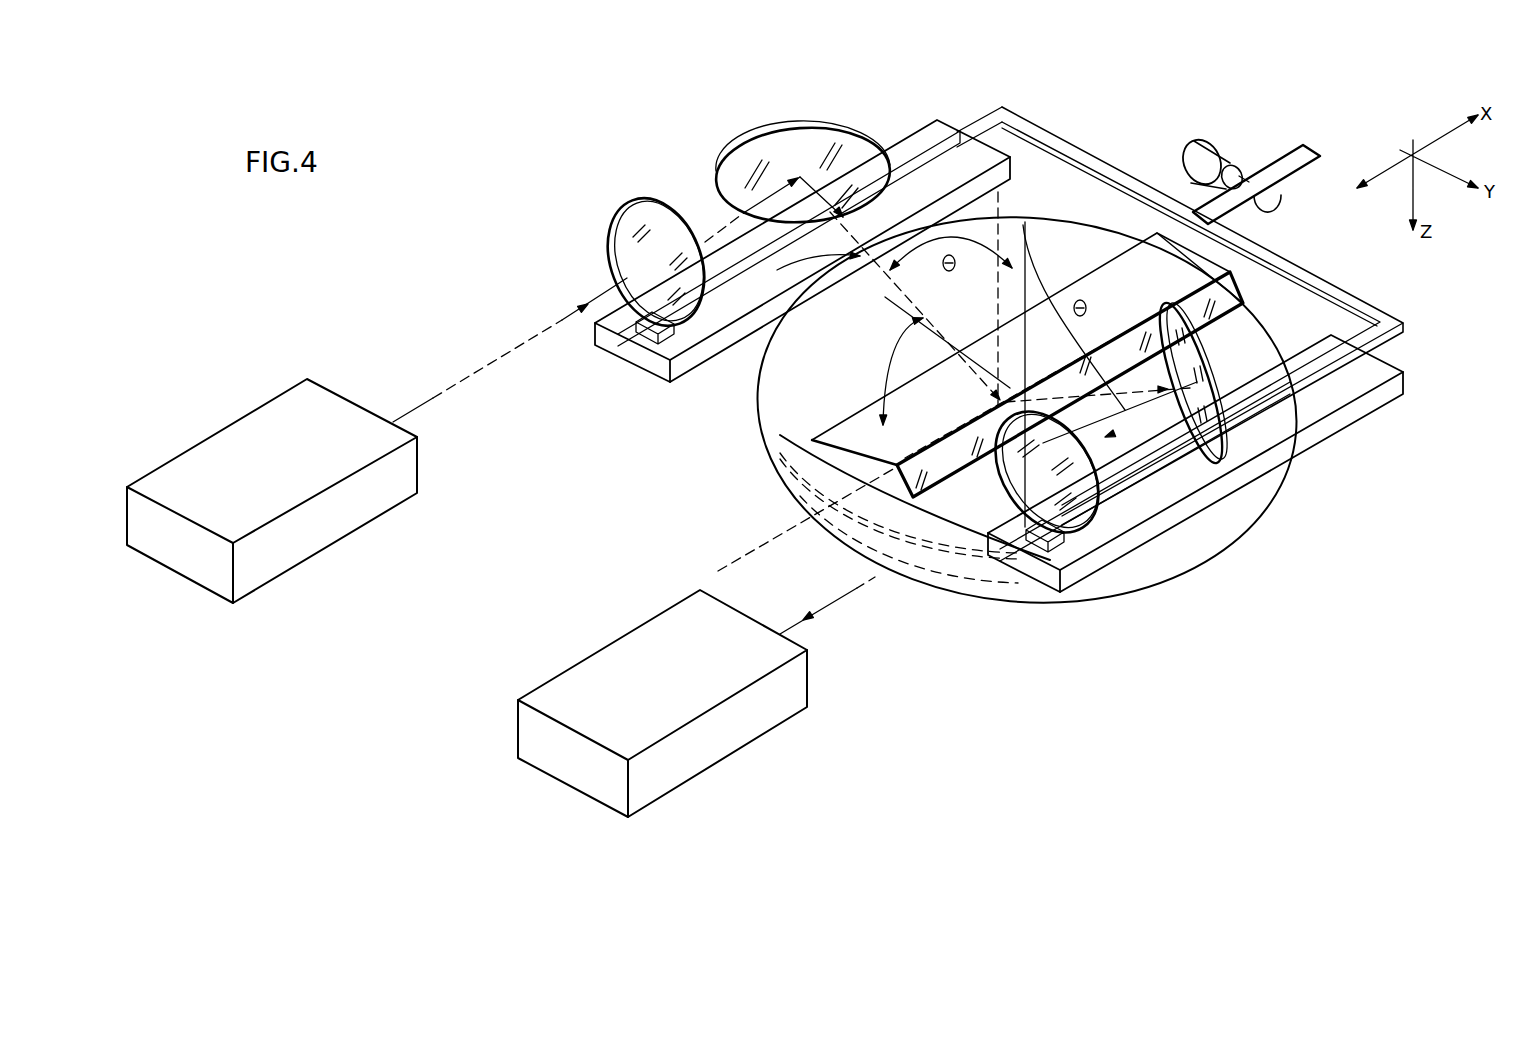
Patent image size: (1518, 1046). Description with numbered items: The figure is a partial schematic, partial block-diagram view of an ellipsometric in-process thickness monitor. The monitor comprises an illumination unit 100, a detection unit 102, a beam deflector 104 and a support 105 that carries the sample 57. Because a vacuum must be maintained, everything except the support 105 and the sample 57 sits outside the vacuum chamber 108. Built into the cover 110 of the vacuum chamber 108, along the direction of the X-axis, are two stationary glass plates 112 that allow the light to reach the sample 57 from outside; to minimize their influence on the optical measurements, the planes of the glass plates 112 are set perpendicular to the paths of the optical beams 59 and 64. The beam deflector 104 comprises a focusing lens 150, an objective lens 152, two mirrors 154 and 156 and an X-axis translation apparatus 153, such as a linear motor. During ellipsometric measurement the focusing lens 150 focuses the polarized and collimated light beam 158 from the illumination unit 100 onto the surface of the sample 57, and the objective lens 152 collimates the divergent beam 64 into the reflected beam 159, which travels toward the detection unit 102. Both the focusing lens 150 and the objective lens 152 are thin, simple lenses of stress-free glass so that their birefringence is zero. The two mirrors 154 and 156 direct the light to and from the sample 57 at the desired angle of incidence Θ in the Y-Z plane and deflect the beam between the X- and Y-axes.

The illumination unit 100 is at (272, 405).
The detection unit 102 is at (663, 612).
The beam deflector 104 is at (1040, 108).
The support 105 is at (800, 490).
The vacuum chamber 108 is at (1340, 290).
The cover 110 is at (780, 443).
The stationary glass plates 112 is at (1270, 337).
The focusing lens 150 is at (627, 213).
The objective lens 152 is at (1073, 510).
The X-axis translation apparatus 153 is at (1213, 155).
The mirror 154 is at (808, 140).
The mirror 156 is at (1223, 380).
The polarized and collimated light beam 158 is at (520, 342).
The reflected beam 159 is at (830, 600).
The sample 57 is at (893, 540).
The optical beam 59 is at (903, 288).
The divergent beam 64 is at (1093, 383).